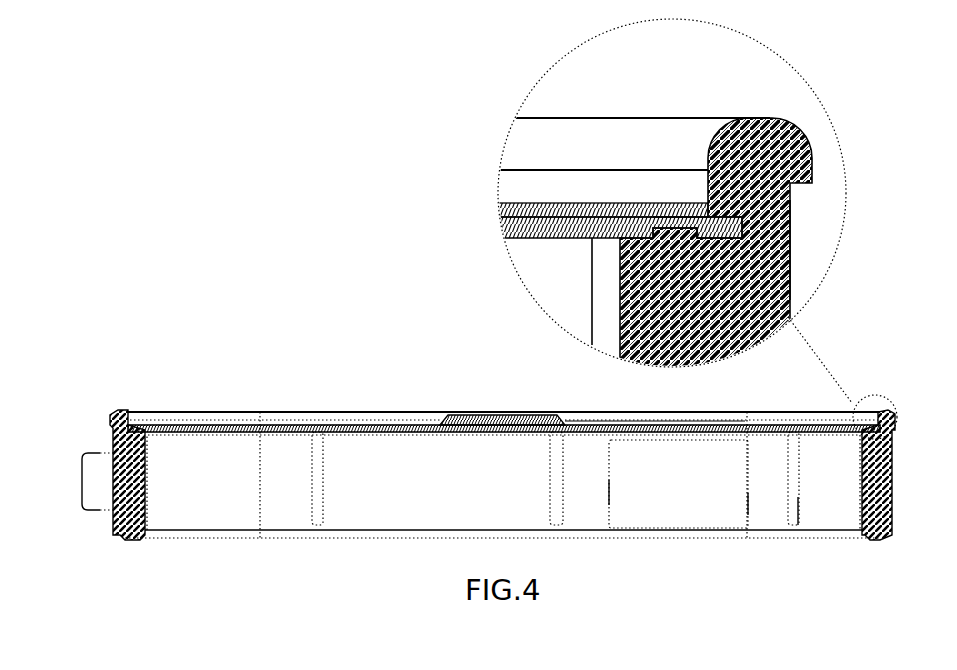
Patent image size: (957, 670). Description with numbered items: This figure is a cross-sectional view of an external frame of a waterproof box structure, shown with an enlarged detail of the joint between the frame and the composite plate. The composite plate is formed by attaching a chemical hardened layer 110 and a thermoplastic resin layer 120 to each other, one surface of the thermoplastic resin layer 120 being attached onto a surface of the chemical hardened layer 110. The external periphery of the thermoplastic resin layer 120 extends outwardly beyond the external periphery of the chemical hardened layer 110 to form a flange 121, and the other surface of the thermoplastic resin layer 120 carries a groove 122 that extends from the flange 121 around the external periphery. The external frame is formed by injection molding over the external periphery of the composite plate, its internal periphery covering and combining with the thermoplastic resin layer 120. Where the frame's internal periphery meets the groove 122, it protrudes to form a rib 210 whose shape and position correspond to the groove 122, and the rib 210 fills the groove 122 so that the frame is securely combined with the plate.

The chemical hardened layer 110 is at (527, 203).
The thermoplastic resin layer 120 is at (575, 240).
The flange 121 is at (791, 232).
The groove 122 is at (631, 208).
The rib 210 is at (674, 210).